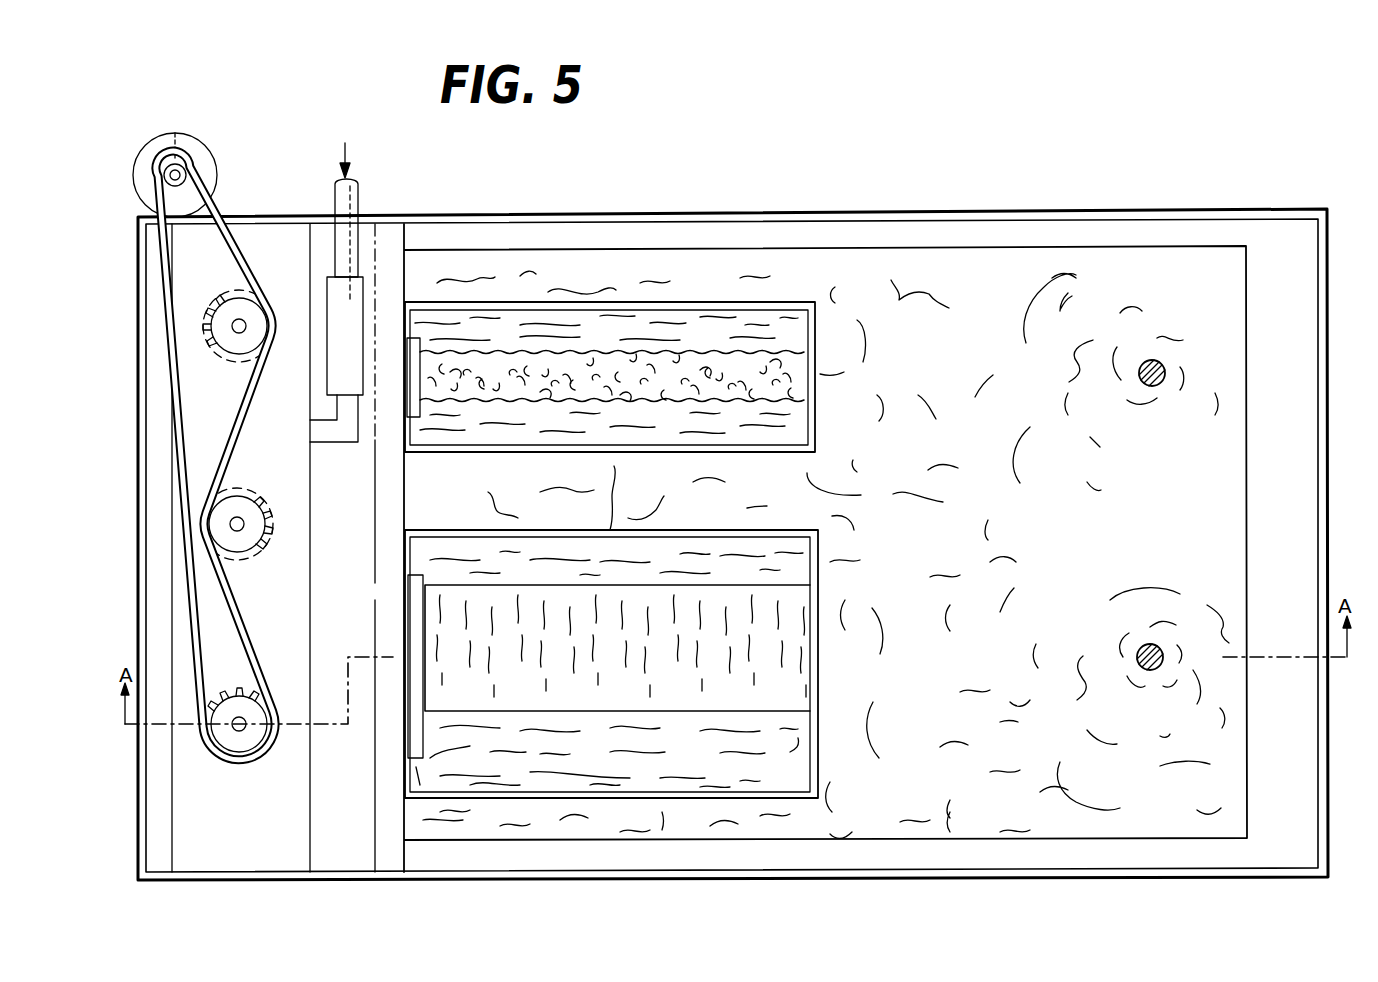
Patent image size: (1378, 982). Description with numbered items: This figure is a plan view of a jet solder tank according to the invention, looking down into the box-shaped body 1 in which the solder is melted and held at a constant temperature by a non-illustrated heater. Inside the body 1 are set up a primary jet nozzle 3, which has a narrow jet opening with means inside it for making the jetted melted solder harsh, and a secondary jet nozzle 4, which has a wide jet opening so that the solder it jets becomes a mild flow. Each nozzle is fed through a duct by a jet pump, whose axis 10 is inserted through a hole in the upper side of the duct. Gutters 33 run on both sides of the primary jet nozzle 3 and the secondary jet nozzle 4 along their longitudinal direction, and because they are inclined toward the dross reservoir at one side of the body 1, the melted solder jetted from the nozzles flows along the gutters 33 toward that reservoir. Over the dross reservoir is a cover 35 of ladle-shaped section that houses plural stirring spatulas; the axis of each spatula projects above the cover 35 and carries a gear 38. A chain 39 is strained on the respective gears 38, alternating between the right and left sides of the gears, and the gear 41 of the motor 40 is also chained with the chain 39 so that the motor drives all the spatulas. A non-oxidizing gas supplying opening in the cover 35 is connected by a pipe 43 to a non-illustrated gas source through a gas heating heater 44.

The body 1 is at (835, 212).
The primary jet nozzle 3 is at (828, 335).
The secondary jet nozzle 4 is at (813, 692).
The axis 10 is at (1151, 360).
The gutters 33 is at (690, 540).
The cover 35 is at (290, 842).
The gear 38 is at (225, 345).
The chain 39 is at (257, 652).
The motor 40 is at (217, 162).
The gear of the motor 41 is at (210, 195).
The pipe 43 is at (340, 435).
The gas heating heater 44 is at (328, 303).